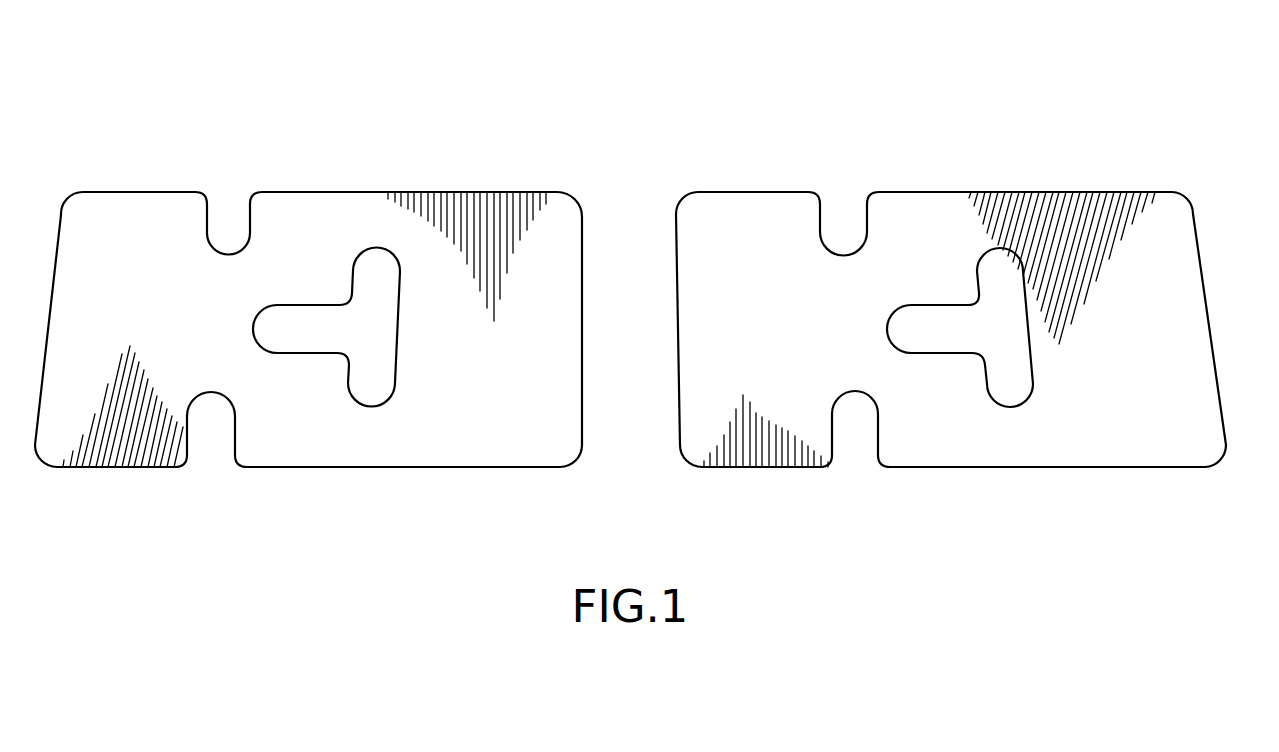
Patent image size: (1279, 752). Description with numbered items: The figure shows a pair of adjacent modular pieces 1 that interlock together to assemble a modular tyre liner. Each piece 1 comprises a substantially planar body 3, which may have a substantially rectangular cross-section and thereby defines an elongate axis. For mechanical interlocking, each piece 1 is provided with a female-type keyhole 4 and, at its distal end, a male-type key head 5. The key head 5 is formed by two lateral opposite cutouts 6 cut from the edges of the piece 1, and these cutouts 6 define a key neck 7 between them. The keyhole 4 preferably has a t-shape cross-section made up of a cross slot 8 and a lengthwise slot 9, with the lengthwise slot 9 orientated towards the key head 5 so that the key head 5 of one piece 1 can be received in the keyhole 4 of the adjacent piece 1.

The modular piece 1 is at (578, 143).
The planar body 3 is at (1203, 280).
The keyhole 4 is at (995, 344).
The key head 5 is at (742, 344).
The cutouts 6 is at (846, 198).
The key neck 7 is at (839, 344).
The cross slot 8 is at (999, 268).
The lengthwise slot 9 is at (908, 330).